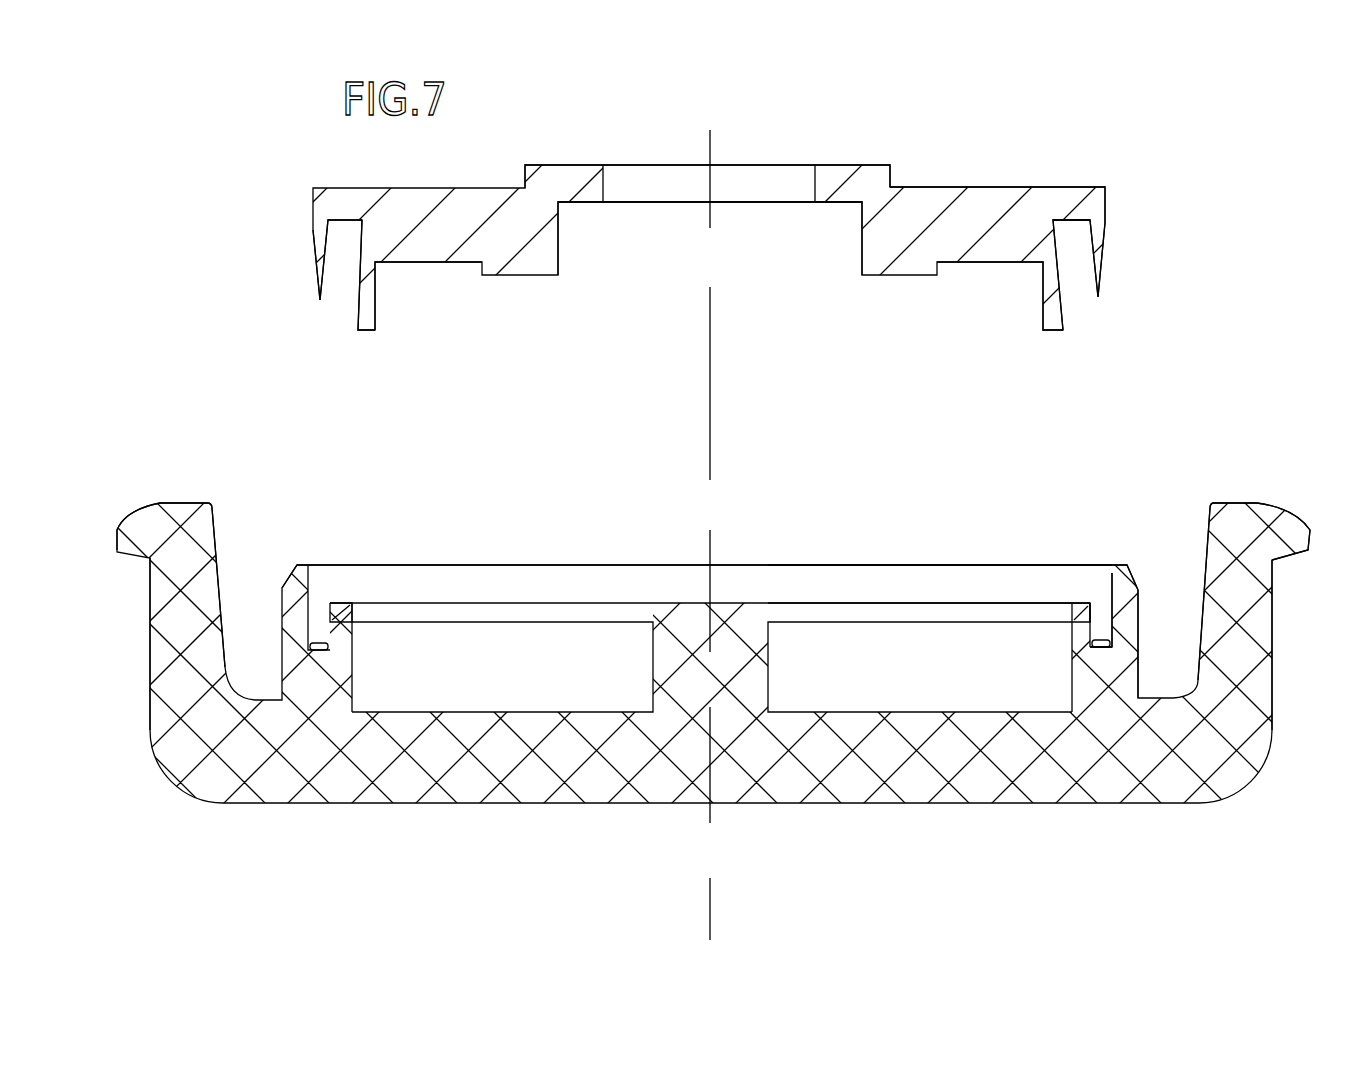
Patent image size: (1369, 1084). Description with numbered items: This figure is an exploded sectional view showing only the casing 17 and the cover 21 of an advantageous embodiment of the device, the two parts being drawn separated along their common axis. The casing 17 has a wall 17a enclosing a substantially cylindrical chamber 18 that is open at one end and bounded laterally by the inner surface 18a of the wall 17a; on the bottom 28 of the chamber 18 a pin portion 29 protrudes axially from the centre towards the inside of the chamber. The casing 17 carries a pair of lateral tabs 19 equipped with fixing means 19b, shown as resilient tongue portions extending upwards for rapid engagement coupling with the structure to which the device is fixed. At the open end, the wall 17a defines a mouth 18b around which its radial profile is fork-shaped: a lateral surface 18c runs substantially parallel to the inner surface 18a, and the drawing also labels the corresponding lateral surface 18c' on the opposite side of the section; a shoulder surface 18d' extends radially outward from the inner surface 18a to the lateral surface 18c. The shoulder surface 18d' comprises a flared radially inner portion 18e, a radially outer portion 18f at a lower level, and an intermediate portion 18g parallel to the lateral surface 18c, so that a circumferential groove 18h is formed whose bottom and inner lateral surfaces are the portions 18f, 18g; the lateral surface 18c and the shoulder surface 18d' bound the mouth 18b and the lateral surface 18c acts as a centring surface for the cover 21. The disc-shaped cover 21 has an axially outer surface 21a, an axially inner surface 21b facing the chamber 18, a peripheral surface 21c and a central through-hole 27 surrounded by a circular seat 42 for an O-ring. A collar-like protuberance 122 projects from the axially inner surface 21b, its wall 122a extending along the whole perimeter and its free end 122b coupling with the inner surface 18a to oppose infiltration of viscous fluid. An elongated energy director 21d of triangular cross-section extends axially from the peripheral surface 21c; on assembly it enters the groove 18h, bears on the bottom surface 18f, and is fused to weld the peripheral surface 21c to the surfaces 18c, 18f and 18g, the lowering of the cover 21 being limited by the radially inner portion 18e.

The casing 17 is at (637, 803).
The wall 17a is at (1105, 688).
The cylindrical chamber 18 is at (565, 660).
The inner surface 18a is at (353, 653).
The mouth 18b is at (908, 600).
The lateral surface 18c is at (310, 557).
The right engaging slot 18c' is at (1131, 553).
The shoulder surface 18d' is at (1026, 566).
The radially inner portion 18e is at (1088, 630).
The radially outer portion 18f is at (320, 643).
The intermediate portion 18g is at (332, 618).
The circumferential groove 18h is at (1100, 623).
The lateral tabs 19 is at (247, 692).
The fixing means 19b is at (153, 673).
The cover 21 is at (878, 165).
The axially outer surface 21a is at (1045, 186).
The axially inner surface 21b is at (979, 263).
The peripheral surface 21c is at (1068, 222).
The elongated energy director 21d is at (1105, 253).
The central through-hole 27 is at (603, 188).
The bottom 28 is at (468, 712).
The pin portion 29 is at (778, 660).
The circular seat 42 is at (833, 204).
The collar-like protuberance 122 is at (352, 308).
The wall 122a is at (366, 305).
The free end 122b is at (367, 332).